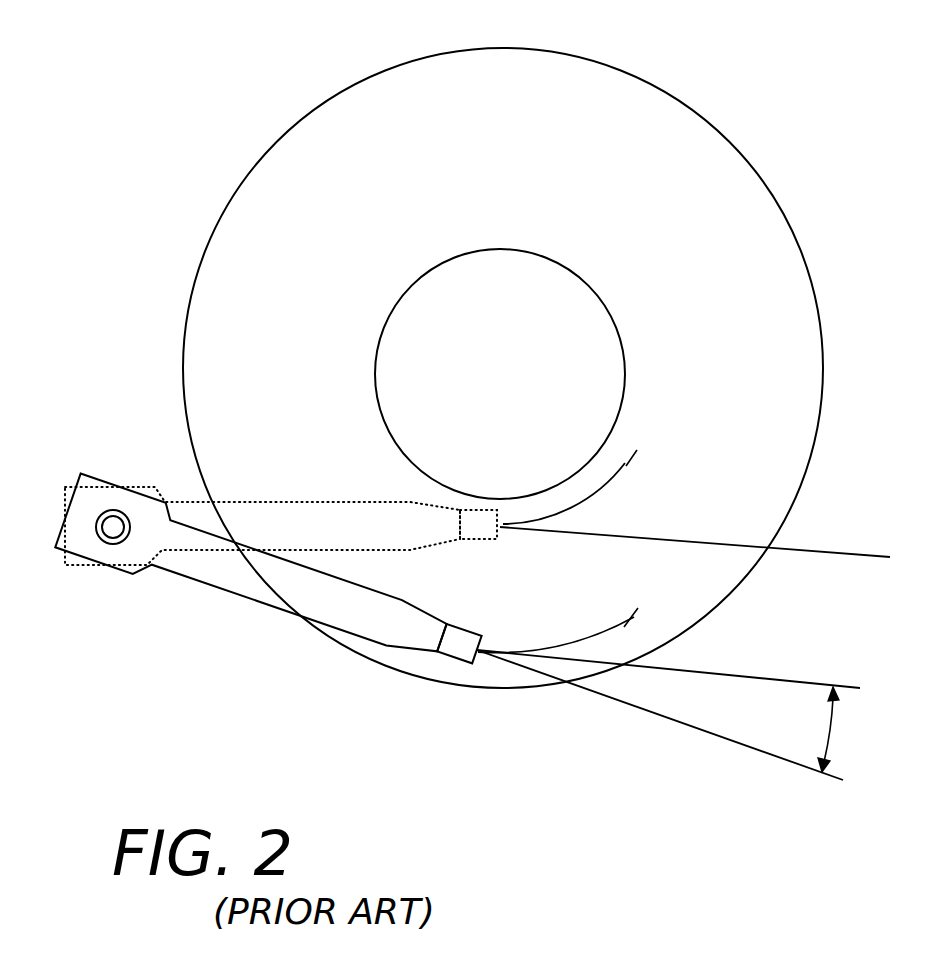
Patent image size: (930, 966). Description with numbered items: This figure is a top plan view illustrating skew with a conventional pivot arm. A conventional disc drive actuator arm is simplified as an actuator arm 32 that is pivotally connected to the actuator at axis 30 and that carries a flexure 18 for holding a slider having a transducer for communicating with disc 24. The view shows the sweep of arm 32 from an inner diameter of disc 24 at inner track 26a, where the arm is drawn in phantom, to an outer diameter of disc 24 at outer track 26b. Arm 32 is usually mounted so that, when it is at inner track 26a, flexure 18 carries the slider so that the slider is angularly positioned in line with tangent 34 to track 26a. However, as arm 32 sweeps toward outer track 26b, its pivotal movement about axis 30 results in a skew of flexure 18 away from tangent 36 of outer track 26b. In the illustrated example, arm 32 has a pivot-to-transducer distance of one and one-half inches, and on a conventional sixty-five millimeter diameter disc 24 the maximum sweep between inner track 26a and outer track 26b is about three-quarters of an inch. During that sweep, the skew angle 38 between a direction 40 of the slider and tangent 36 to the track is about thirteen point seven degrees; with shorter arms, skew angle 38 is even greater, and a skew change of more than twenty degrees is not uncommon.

The disc 24 is at (580, 92).
The inner track 26a is at (627, 464).
The outer track 26b is at (636, 616).
The axis 30 is at (108, 535).
The actuator arm 32 is at (250, 578).
The flexure 18 is at (463, 658).
The tangent 34 is at (827, 548).
The tangent 36 is at (808, 682).
The skew angle 38 is at (844, 729).
The direction 40 is at (725, 740).